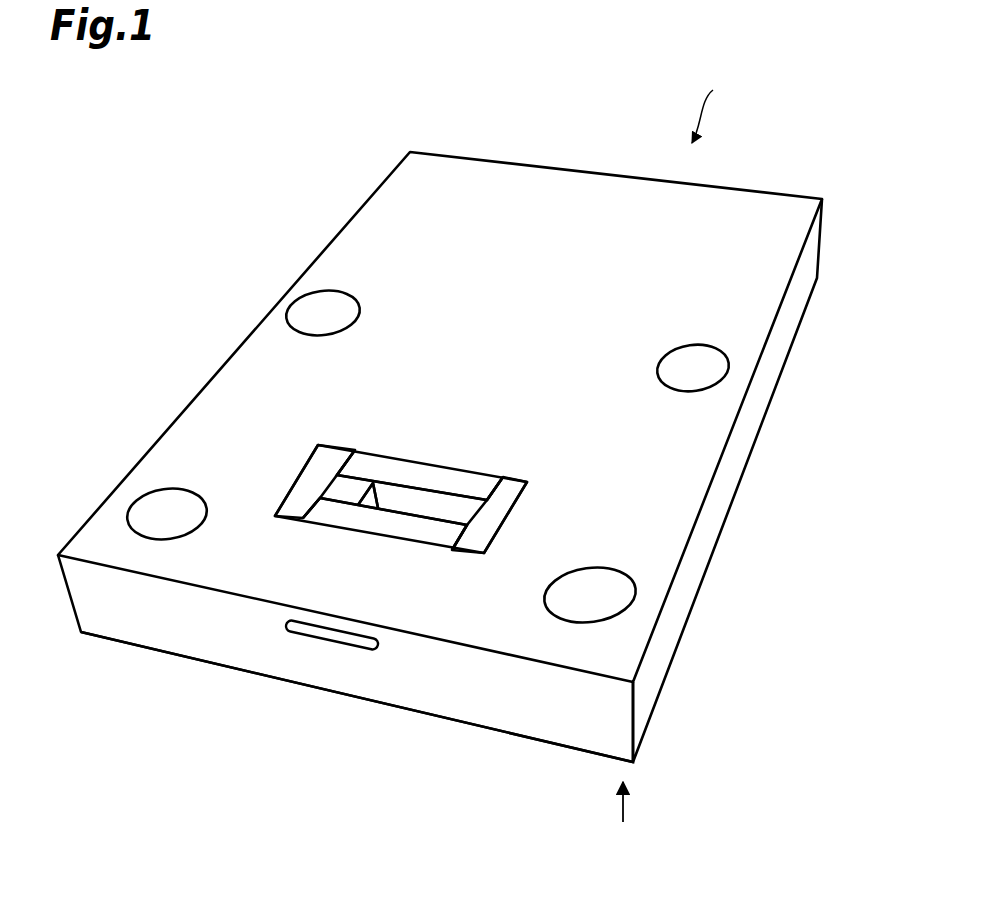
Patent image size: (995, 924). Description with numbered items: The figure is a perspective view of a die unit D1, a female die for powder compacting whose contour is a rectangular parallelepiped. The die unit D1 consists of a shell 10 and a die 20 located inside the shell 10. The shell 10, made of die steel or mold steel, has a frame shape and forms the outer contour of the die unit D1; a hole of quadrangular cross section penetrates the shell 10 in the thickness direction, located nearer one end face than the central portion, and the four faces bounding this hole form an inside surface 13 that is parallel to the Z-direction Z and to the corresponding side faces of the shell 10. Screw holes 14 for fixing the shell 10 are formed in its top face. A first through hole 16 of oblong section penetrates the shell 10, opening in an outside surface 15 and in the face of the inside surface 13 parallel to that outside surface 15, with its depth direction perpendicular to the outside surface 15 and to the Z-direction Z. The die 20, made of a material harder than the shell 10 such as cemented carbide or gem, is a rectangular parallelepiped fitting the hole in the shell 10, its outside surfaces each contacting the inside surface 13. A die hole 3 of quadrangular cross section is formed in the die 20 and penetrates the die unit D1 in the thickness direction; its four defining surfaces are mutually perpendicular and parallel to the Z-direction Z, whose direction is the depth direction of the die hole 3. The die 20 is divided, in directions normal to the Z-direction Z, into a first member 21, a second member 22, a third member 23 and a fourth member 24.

The die hole 3 is at (393, 494).
The shell 10 is at (797, 197).
The inside surface 13 is at (505, 471).
The screw holes 14 is at (288, 311).
The outside surface 15 is at (528, 722).
The first through hole 16 is at (333, 645).
The die 20 is at (338, 440).
The first member 21 is at (493, 505).
The second member 22 is at (372, 522).
The third member 23 is at (310, 470).
The fourth member 24 is at (437, 472).
The die unit D1 is at (718, 106).
The Z-direction Z is at (636, 806).